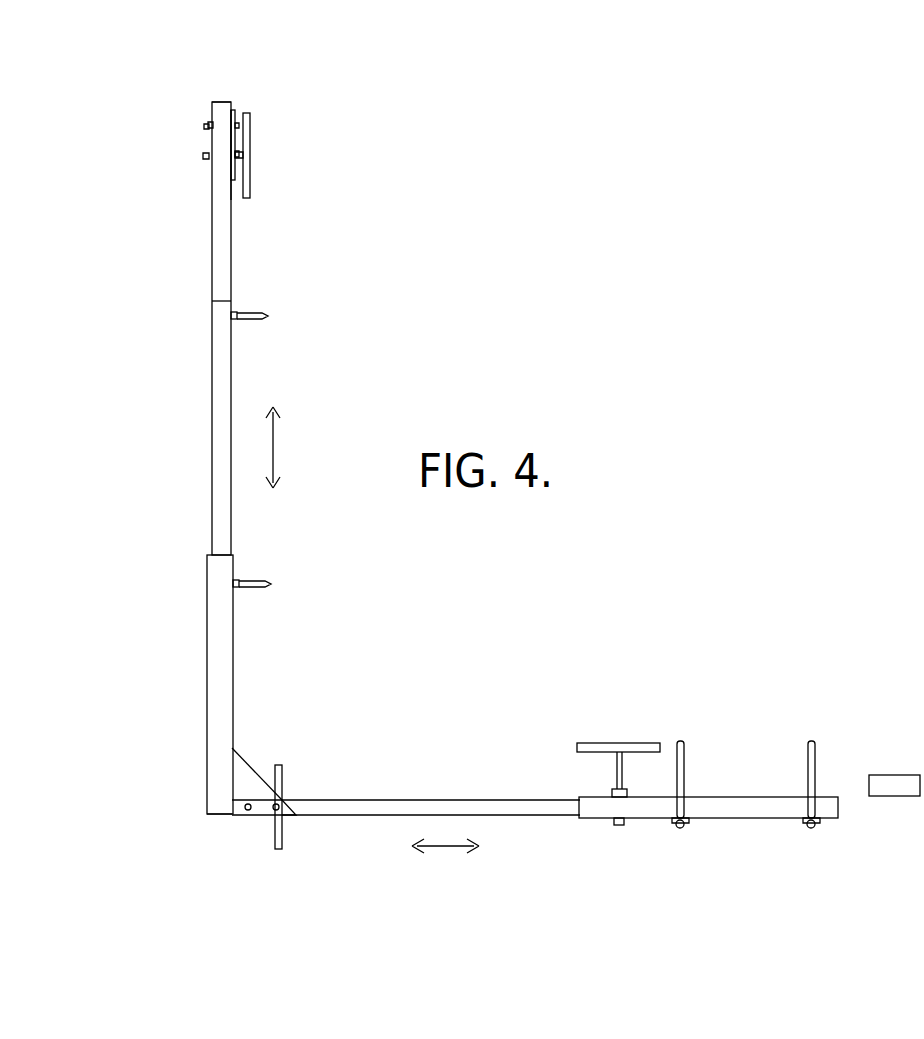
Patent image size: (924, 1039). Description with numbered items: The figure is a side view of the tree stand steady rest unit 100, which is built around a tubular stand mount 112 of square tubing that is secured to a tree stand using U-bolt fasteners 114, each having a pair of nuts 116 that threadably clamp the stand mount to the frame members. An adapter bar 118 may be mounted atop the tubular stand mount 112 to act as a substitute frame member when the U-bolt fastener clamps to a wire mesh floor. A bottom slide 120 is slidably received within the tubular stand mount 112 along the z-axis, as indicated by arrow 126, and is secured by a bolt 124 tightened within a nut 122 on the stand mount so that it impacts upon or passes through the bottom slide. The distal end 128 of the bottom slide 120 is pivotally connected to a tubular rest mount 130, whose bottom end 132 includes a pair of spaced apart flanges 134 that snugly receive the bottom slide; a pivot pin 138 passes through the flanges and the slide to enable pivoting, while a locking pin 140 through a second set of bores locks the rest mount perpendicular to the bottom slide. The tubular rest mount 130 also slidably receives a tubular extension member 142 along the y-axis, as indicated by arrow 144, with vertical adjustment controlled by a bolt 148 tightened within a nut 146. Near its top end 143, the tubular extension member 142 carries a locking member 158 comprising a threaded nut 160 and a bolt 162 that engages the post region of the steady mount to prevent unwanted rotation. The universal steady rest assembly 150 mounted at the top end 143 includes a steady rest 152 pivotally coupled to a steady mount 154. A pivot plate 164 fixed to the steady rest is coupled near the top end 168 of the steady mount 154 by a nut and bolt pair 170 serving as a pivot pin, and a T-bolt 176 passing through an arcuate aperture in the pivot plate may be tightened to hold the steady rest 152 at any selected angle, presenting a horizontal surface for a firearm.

The tree stand steady rest unit 100 is at (418, 298).
The tubular stand mount 112 is at (742, 800).
The U-bolt fasteners 114 is at (684, 745).
The nuts 116 is at (683, 828).
The adapter bar 118 is at (890, 777).
The bottom slide 120 is at (447, 800).
The nut 122 is at (608, 793).
The bolt 124 is at (618, 742).
The arrow 126 is at (445, 850).
The distal end 128 is at (340, 761).
The tubular rest mount 130 is at (210, 686).
The bottom end 132 is at (208, 812).
The flanges 134 is at (255, 765).
The pivot pin 138 is at (248, 811).
The locking pin 140 is at (282, 838).
The tubular extension member 142 is at (210, 462).
The top end 143 is at (222, 300).
The arrow 144 is at (278, 440).
The nut 146 is at (238, 582).
The bolt 148 is at (245, 587).
The universal steady rest assembly 150 is at (206, 191).
The steady rest 152 is at (221, 102).
The steady mount 154 is at (231, 210).
The locking member 158 is at (250, 320).
The threaded nut 160 is at (235, 312).
The bolt 162 is at (262, 317).
The pivot plate 164 is at (234, 112).
The top end 168 is at (212, 118).
The nut and bolt pair 170 is at (205, 128).
The T-bolt 176 is at (250, 152).